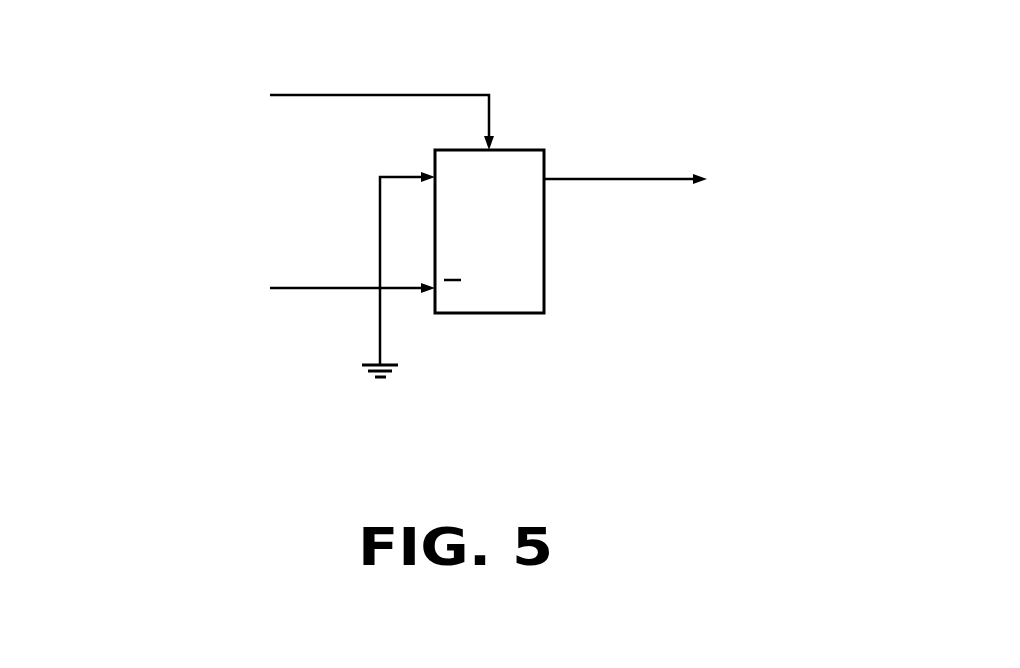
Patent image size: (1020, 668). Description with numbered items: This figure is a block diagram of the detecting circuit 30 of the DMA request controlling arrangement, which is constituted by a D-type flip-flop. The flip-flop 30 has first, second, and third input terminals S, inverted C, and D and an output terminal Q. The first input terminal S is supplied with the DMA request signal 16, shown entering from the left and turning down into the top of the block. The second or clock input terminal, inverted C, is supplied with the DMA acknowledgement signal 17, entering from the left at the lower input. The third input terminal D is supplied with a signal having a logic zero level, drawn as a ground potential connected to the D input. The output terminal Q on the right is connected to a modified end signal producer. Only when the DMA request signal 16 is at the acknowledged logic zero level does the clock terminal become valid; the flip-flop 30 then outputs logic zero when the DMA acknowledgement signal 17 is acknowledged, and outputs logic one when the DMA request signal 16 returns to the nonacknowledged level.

The DMA request signal 16 is at (322, 95).
The DMA acknowledgement signal 17 is at (316, 287).
The detecting circuit 30 is at (510, 150).